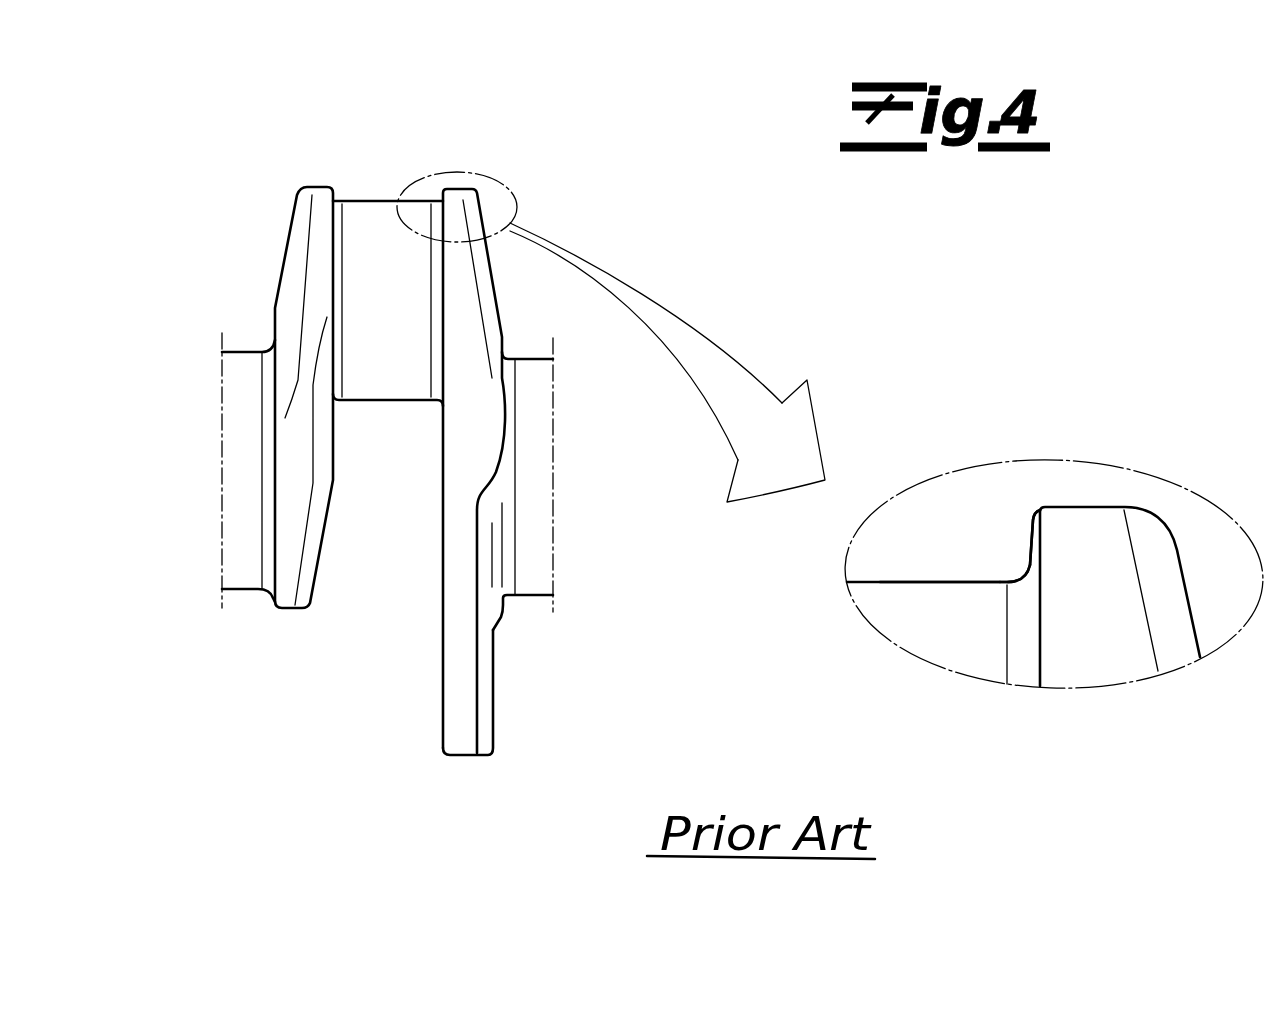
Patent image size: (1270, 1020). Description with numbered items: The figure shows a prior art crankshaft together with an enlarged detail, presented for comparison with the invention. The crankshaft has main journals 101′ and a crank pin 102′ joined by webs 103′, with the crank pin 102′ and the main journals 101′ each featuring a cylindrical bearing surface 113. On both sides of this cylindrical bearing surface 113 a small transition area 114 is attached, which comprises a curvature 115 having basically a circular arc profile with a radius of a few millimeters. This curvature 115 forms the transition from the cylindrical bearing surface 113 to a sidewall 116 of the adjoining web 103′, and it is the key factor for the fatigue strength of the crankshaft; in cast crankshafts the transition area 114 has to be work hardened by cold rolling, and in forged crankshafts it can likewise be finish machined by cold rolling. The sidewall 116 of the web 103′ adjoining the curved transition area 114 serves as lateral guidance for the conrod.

The main journal 101′ is at (235, 352).
The crank pin 102′ is at (357, 198).
The web 103′ is at (312, 223).
The cylindrical bearing surface 113 is at (903, 581).
The transition area 114 is at (1013, 558).
The curvature 115 is at (1032, 580).
The sidewall 116 is at (1028, 543).